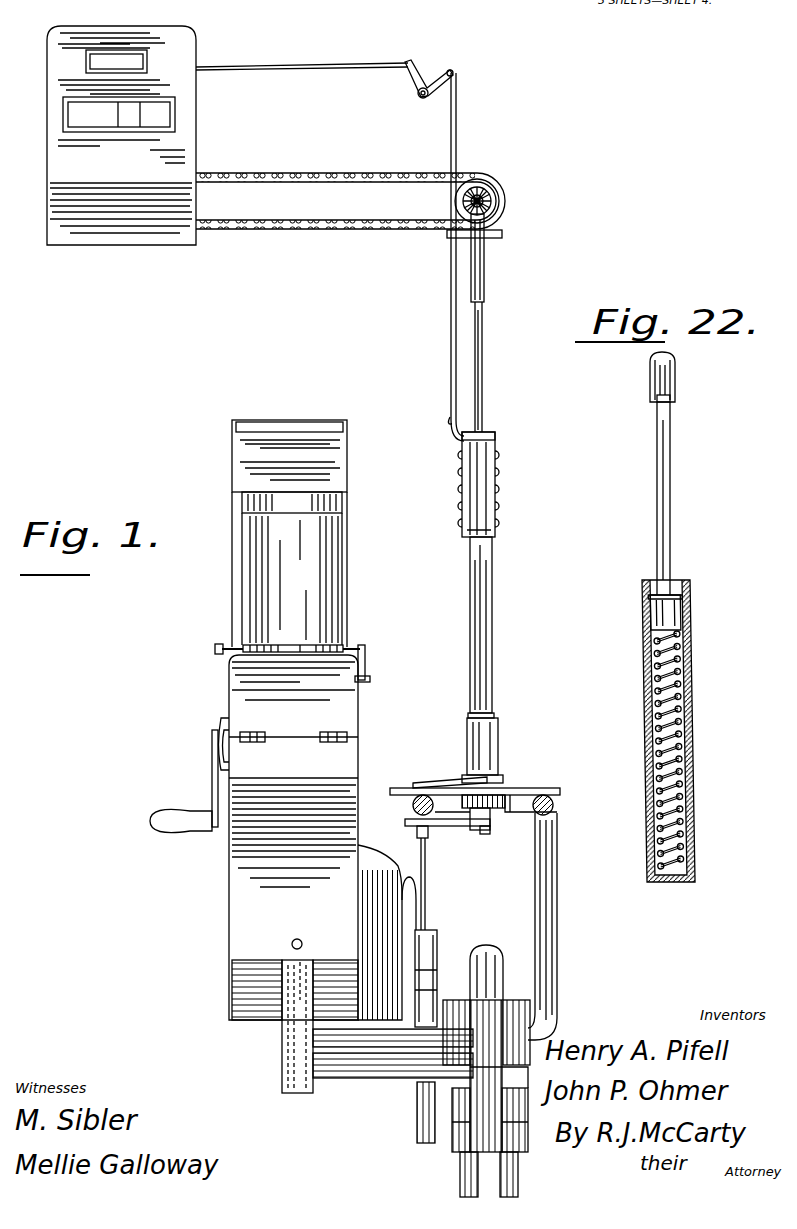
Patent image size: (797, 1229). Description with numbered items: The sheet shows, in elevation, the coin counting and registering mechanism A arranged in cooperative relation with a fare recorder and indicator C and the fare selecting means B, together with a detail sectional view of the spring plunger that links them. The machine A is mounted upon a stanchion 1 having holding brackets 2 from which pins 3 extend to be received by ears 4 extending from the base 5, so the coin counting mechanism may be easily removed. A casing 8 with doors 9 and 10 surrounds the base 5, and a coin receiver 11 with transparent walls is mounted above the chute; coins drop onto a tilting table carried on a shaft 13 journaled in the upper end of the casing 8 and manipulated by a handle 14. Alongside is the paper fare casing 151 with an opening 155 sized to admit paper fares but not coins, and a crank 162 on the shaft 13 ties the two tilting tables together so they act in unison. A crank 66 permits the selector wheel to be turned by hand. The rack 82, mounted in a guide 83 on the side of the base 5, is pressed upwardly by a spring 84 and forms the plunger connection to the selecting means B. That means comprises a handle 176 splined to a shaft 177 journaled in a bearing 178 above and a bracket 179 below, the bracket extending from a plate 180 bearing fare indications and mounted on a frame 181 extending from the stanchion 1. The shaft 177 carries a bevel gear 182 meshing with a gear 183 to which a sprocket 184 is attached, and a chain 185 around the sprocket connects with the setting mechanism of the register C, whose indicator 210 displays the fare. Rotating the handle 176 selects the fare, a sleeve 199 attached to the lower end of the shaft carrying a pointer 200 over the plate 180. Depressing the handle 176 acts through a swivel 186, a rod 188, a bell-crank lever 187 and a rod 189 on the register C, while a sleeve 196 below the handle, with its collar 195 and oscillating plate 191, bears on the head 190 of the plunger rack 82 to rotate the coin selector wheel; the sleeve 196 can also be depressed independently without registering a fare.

In FIG. 1, the stanchion 1 is at (490, 1170).
In FIG. 1, the holding brackets 2 is at (372, 1066).
In FIG. 1, the pins 3 is at (285, 985).
In FIG. 1, the ears 4 is at (280, 968).
In FIG. 1, the base 5 is at (335, 990).
In FIG. 1, the casing 8 is at (293, 837).
In FIG. 1, the door 9 is at (293, 863).
In FIG. 1, the door 10 is at (410, 879).
In FIG. 1, the coin receiver 11 is at (292, 572).
In FIG. 1, the shaft 13 is at (353, 646).
In FIG. 1, the handle 14 is at (220, 644).
In FIG. 1, the crank 66 is at (212, 790).
In FIG. 1, the rack 82 is at (428, 882).
In FIG. 22, the rack 82 is at (668, 515).
In FIG. 1, the guide 83 is at (437, 965).
In FIG. 22, the guide 83 is at (687, 748).
In FIG. 22, the spring 84 is at (648, 701).
In FIG. 1, the casing 151 is at (290, 460).
In FIG. 1, the opening 155 is at (288, 424).
In FIG. 1, the crank 162 is at (366, 660).
In FIG. 1, the handle 176 is at (495, 468).
In FIG. 1, the shaft 177 is at (482, 370).
In FIG. 1, the bearing 178 is at (503, 234).
In FIG. 1, the bracket 179 is at (512, 812).
In FIG. 1, the plate 180 is at (556, 789).
In FIG. 1, the frame 181 is at (555, 916).
In FIG. 1, the bevel gear 182 is at (501, 204).
In FIG. 1, the bevel gear 183 is at (471, 191).
In FIG. 1, the sprocket 184 is at (463, 193).
In FIG. 1, the chain 185 is at (337, 173).
In FIG. 1, the swivel 186 is at (456, 443).
In FIG. 1, the bell-crank lever 187 is at (412, 86).
In FIG. 1, the rod 188 is at (452, 341).
In FIG. 1, the rod 189 is at (322, 66).
In FIG. 1, the head 190 is at (430, 835).
In FIG. 22, the head 190 is at (665, 366).
In FIG. 1, the oscillating plate 191 is at (406, 821).
In FIG. 1, the collar 195 is at (498, 714).
In FIG. 1, the sleeve 196 is at (482, 633).
In FIG. 1, the sleeve 199 is at (476, 738).
In FIG. 1, the pointer 200 is at (445, 771).
In FIG. 1, the indicator 210 is at (131, 128).
In FIG. 1, the coin counting and registering mechanism A is at (176, 587).
In FIG. 1, the fare selecting means B is at (527, 492).
In FIG. 1, the fare recorder and indicator C is at (138, 135).